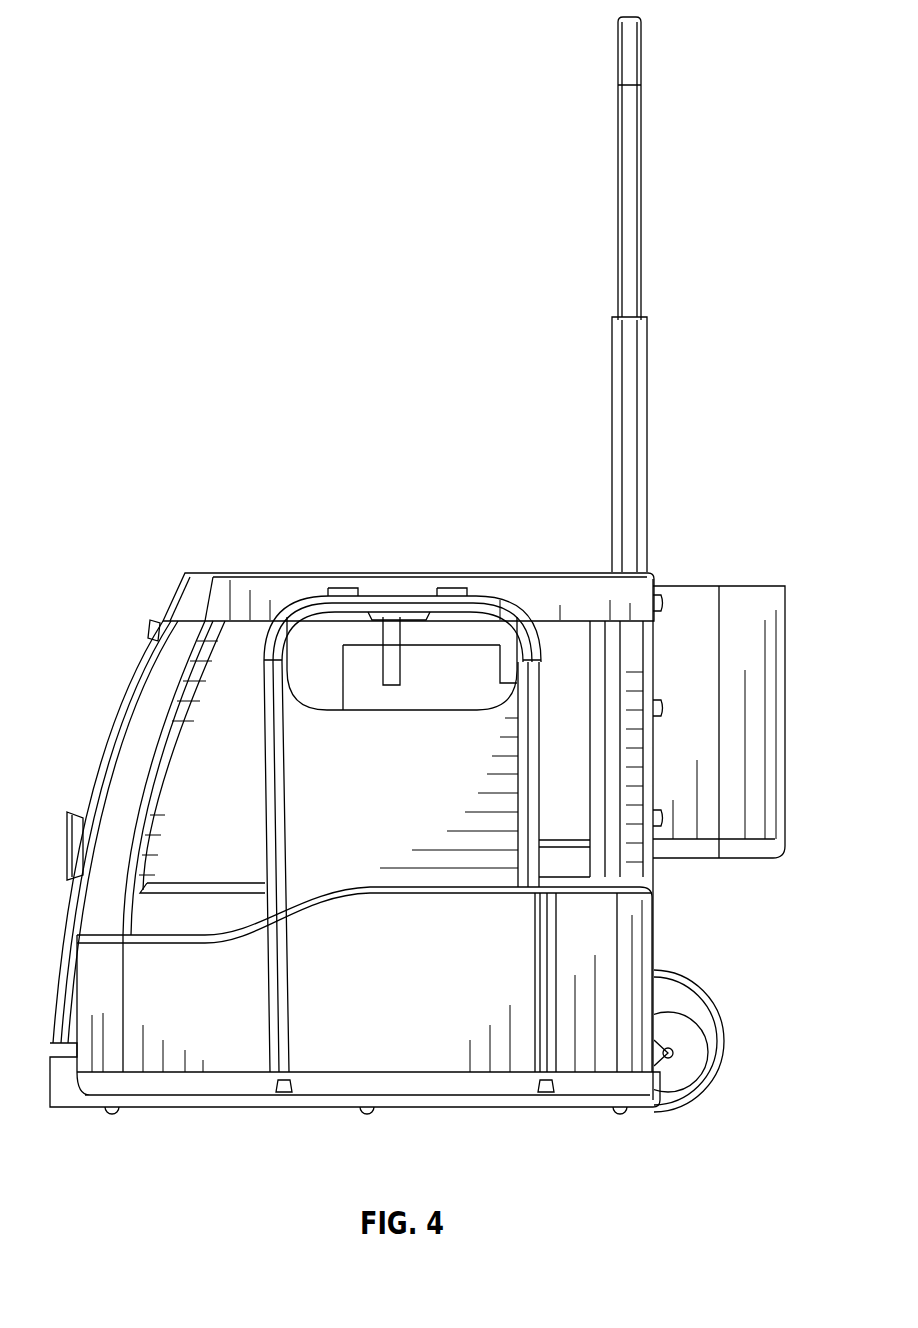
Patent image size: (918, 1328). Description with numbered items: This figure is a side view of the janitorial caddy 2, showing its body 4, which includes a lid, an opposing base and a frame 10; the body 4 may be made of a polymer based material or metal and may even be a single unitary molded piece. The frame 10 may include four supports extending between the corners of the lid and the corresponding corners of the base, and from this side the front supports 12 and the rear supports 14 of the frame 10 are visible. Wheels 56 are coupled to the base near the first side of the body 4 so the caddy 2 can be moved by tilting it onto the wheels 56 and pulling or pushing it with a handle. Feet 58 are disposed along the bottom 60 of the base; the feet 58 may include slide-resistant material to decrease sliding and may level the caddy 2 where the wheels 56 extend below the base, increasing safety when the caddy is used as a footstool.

The caddy 2 is at (294, 448).
The body 4 is at (257, 585).
The frame 10 is at (152, 705).
The front supports 12 is at (113, 793).
The rear supports 14 is at (633, 668).
The wheels 56 is at (705, 1060).
The feet 58 is at (112, 1117).
The bottom 60 is at (495, 1110).